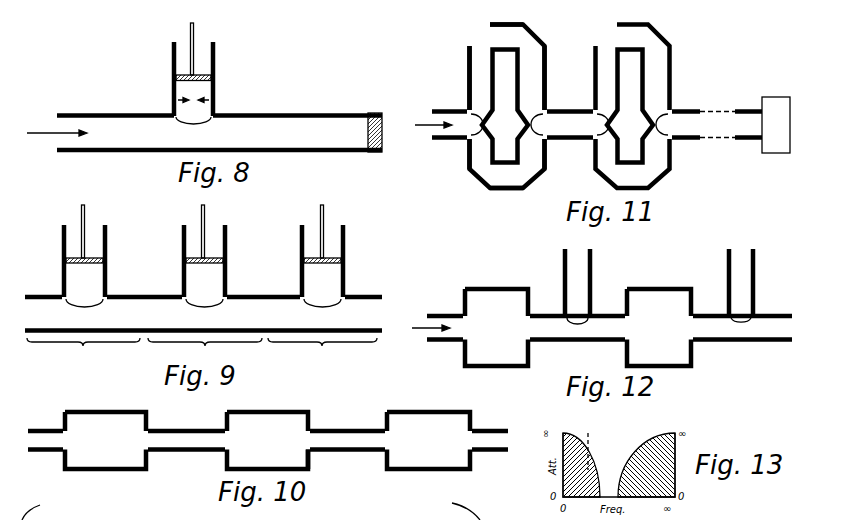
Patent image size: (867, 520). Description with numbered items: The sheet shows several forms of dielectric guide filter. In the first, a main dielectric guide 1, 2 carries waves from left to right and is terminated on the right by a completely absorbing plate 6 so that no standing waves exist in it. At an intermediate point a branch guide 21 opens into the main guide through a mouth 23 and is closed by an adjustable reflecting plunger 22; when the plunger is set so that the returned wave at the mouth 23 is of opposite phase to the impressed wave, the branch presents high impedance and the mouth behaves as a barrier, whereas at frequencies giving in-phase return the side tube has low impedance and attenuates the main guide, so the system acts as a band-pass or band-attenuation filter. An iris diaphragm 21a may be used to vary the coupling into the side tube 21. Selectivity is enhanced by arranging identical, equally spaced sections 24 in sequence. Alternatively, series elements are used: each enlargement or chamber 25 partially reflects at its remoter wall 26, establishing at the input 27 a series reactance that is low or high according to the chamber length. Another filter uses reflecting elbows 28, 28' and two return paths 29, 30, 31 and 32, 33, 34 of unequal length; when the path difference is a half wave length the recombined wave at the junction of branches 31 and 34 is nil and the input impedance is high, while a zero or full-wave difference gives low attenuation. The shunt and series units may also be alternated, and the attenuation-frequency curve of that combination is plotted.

In FIG. 8, the dielectric guide 1 is at (108, 123).
In FIG. 11, the dielectric guide 1 is at (443, 114).
In FIG. 8, the dielectric guide 2 is at (82, 113).
In FIG. 11, the dielectric guide 2 is at (437, 138).
In FIG. 8, the absorbing plate 6 is at (378, 111).
In FIG. 8, the branch guide 21 is at (215, 57).
In FIG. 8, the iris diaphragm 21a is at (212, 100).
In FIG. 8, the adjustable reflecting plunger 22 is at (211, 79).
In FIG. 8, the mouth 23 is at (205, 123).
In FIG. 9, the sections 24 is at (202, 350).
In FIG. 10, the enlargement or chamber 25 is at (233, 458).
In FIG. 10, the remoter wall 26 is at (300, 458).
In FIG. 10, the input 27 is at (45, 430).
In FIG. 11, the reflecting elbows 28 is at (579, 110).
In FIG. 11, the reflecting elbows 28' is at (567, 106).
In FIG. 11, the branching unit 29 is at (477, 68).
In FIG. 11, the branch 30 is at (517, 35).
In FIG. 11, the branch 31 is at (537, 75).
In FIG. 11, the branch 32 is at (477, 140).
In FIG. 11, the branch 33 is at (510, 178).
In FIG. 11, the branch 34 is at (537, 155).